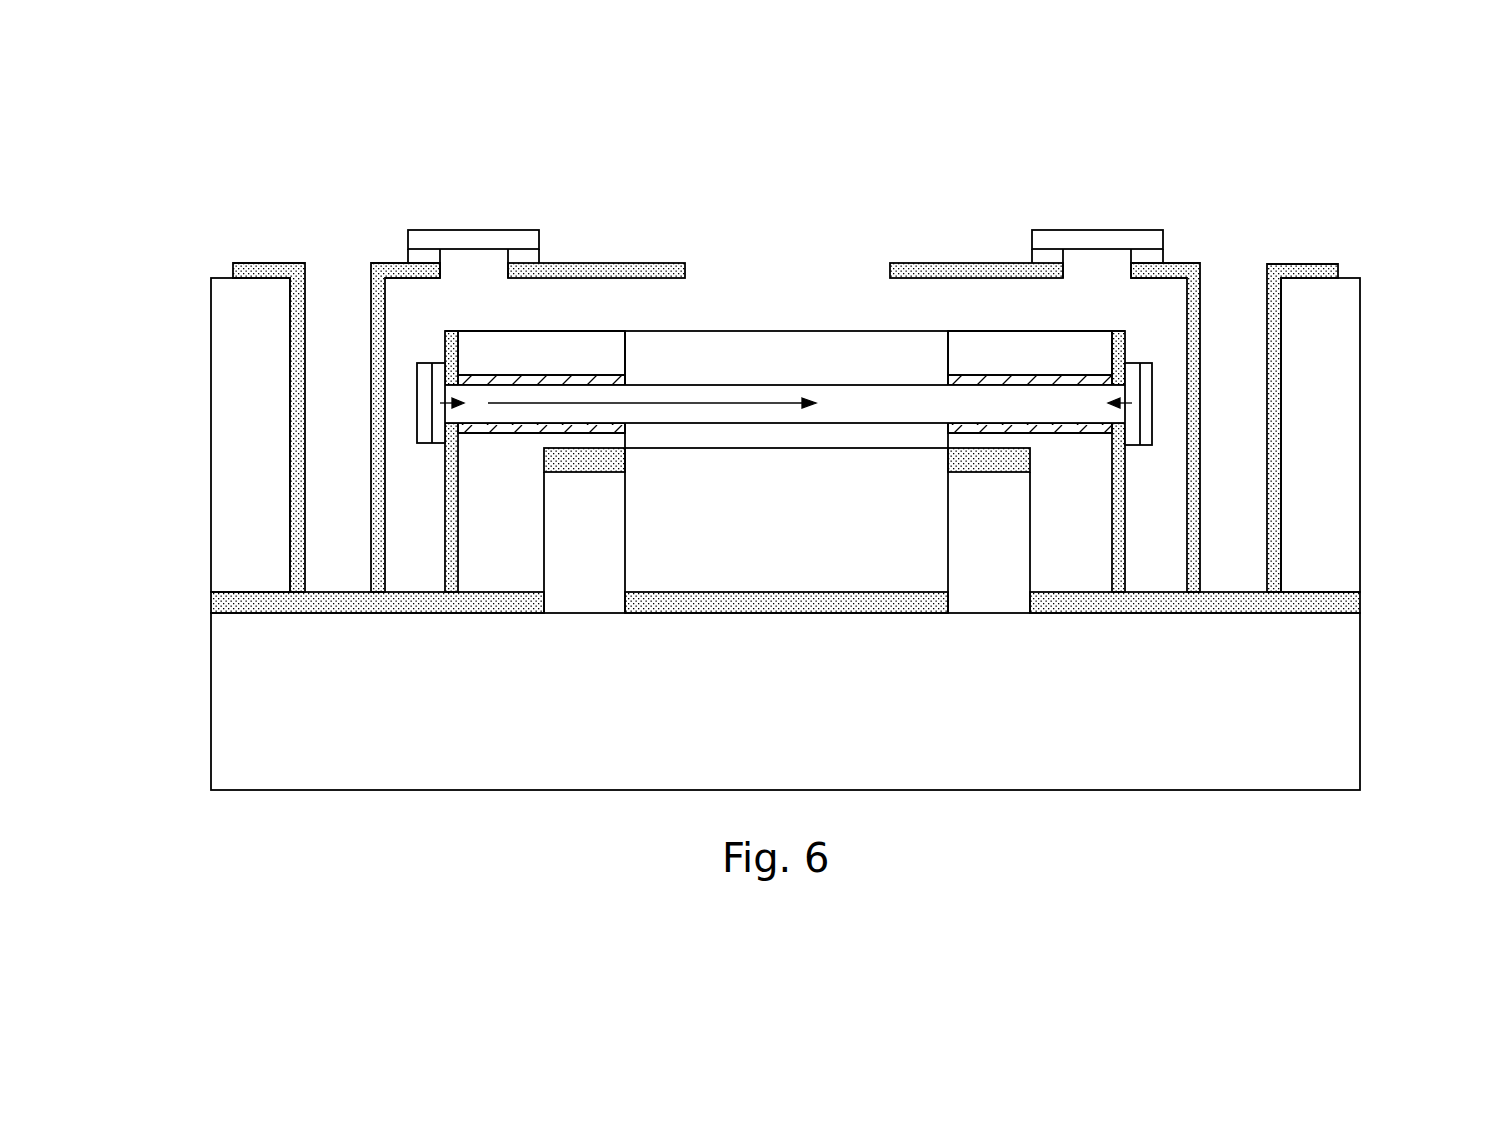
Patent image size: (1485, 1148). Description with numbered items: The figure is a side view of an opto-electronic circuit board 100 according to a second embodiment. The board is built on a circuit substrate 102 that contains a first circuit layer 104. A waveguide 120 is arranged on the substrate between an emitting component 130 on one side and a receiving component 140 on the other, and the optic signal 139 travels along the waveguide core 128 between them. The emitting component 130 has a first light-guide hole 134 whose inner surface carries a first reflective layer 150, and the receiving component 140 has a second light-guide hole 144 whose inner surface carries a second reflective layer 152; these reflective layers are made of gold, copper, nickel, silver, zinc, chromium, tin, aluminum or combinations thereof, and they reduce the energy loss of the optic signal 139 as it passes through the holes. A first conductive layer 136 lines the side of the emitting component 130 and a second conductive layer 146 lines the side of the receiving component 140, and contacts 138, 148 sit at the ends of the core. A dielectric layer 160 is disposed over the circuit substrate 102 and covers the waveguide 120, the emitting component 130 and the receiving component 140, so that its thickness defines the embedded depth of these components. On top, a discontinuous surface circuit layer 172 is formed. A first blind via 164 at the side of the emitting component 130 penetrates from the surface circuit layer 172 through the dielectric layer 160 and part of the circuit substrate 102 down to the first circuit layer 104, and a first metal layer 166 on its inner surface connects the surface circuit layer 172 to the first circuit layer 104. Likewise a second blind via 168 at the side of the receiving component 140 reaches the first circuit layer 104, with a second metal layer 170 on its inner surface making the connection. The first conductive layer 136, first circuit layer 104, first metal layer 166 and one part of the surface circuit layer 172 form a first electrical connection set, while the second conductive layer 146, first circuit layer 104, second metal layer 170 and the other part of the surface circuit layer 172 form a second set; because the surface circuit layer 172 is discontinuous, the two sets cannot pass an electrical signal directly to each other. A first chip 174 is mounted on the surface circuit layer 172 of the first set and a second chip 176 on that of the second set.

The opto-electronic circuit board 100 is at (190, 160).
The circuit substrate 102 is at (1348, 719).
The first circuit layer 104 is at (1352, 600).
The waveguide 120 is at (785, 369).
The waveguide core 128 is at (852, 405).
The emitting component 130 is at (500, 350).
The first light-guide hole 134 is at (446, 404).
The first conductive layer 136 is at (446, 525).
The first contact 138 is at (427, 388).
The optic signal 139 is at (750, 405).
The receiving component 140 is at (1072, 350).
The second light-guide hole 144 is at (1125, 405).
The second conductive layer 146 is at (1125, 523).
The second contact 148 is at (1150, 388).
The first reflective layer 150 is at (580, 380).
The second reflective layer 152 is at (992, 378).
The dielectric layer 160 is at (1347, 298).
The first blind via 164 is at (336, 258).
The first metal layer 166 is at (292, 326).
The second blind via 168 is at (1230, 258).
The second metal layer 170 is at (1273, 322).
The surface circuit layer 172 is at (578, 268).
The first chip 174 is at (428, 240).
The second chip 176 is at (1072, 240).